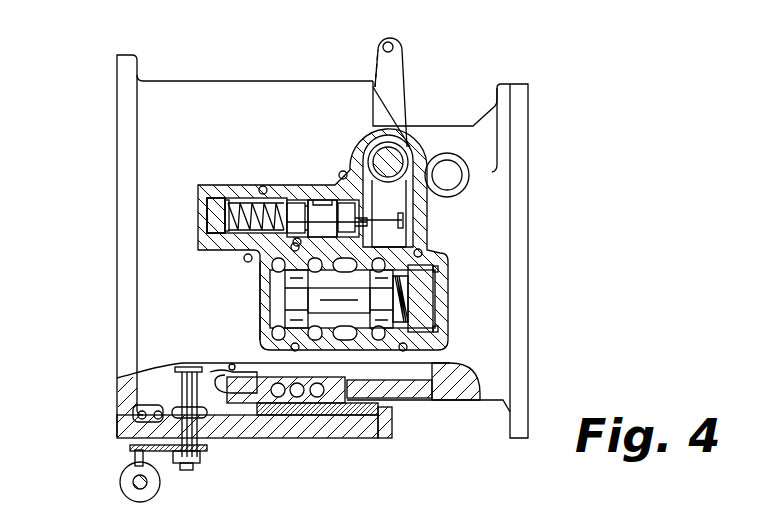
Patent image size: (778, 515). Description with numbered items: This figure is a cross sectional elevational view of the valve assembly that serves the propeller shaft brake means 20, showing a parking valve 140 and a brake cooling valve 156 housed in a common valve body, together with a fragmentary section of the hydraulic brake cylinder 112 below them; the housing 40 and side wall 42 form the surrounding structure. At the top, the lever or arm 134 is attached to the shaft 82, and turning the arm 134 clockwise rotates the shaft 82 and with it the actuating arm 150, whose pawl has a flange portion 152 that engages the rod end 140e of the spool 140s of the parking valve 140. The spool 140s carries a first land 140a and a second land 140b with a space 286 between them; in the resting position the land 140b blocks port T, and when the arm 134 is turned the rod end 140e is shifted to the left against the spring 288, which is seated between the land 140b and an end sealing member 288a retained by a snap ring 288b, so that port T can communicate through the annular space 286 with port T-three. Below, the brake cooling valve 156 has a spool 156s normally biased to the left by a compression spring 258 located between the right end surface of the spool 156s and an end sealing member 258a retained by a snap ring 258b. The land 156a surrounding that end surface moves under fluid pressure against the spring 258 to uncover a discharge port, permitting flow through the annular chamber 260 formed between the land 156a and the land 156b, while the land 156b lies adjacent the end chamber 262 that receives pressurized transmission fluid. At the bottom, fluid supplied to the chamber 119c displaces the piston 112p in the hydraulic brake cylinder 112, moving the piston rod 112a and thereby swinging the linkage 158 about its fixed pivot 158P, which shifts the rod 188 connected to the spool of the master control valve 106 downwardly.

The propeller shaft brake means 20 is at (203, 80).
The housing 40 is at (274, 80).
The side wall 42 is at (120, 72).
The shaft 82 is at (393, 160).
The master control valve 106 is at (125, 463).
The hydraulic brake cylinder 112 is at (413, 373).
The piston rod 112a is at (210, 367).
The piston 112p is at (338, 397).
The chamber 119c is at (435, 393).
The lever or arm 134 is at (406, 60).
The parking valve 140 is at (305, 200).
The first land 140a is at (352, 200).
The second land 140b is at (290, 200).
The rod end 140e is at (362, 195).
The spool 140s is at (323, 200).
The actuating arm 150 is at (393, 205).
The flange portion 152 is at (403, 225).
The brake cooling valve 156 is at (284, 297).
The land 156a is at (447, 332).
The land 156b is at (284, 313).
The spool 156s is at (307, 322).
The linkage 158 is at (181, 380).
The fixed pivot 158P is at (200, 420).
The rod 188 is at (138, 482).
The compression spring 258 is at (440, 295).
The end sealing member 258a is at (448, 322).
The snap ring 258b is at (448, 262).
The annular chamber 260 is at (252, 268).
The end chamber 262 is at (259, 280).
The space 286 is at (295, 200).
The spring 288 is at (210, 198).
The end sealing member 288a is at (218, 220).
The snap ring 288b is at (208, 202).